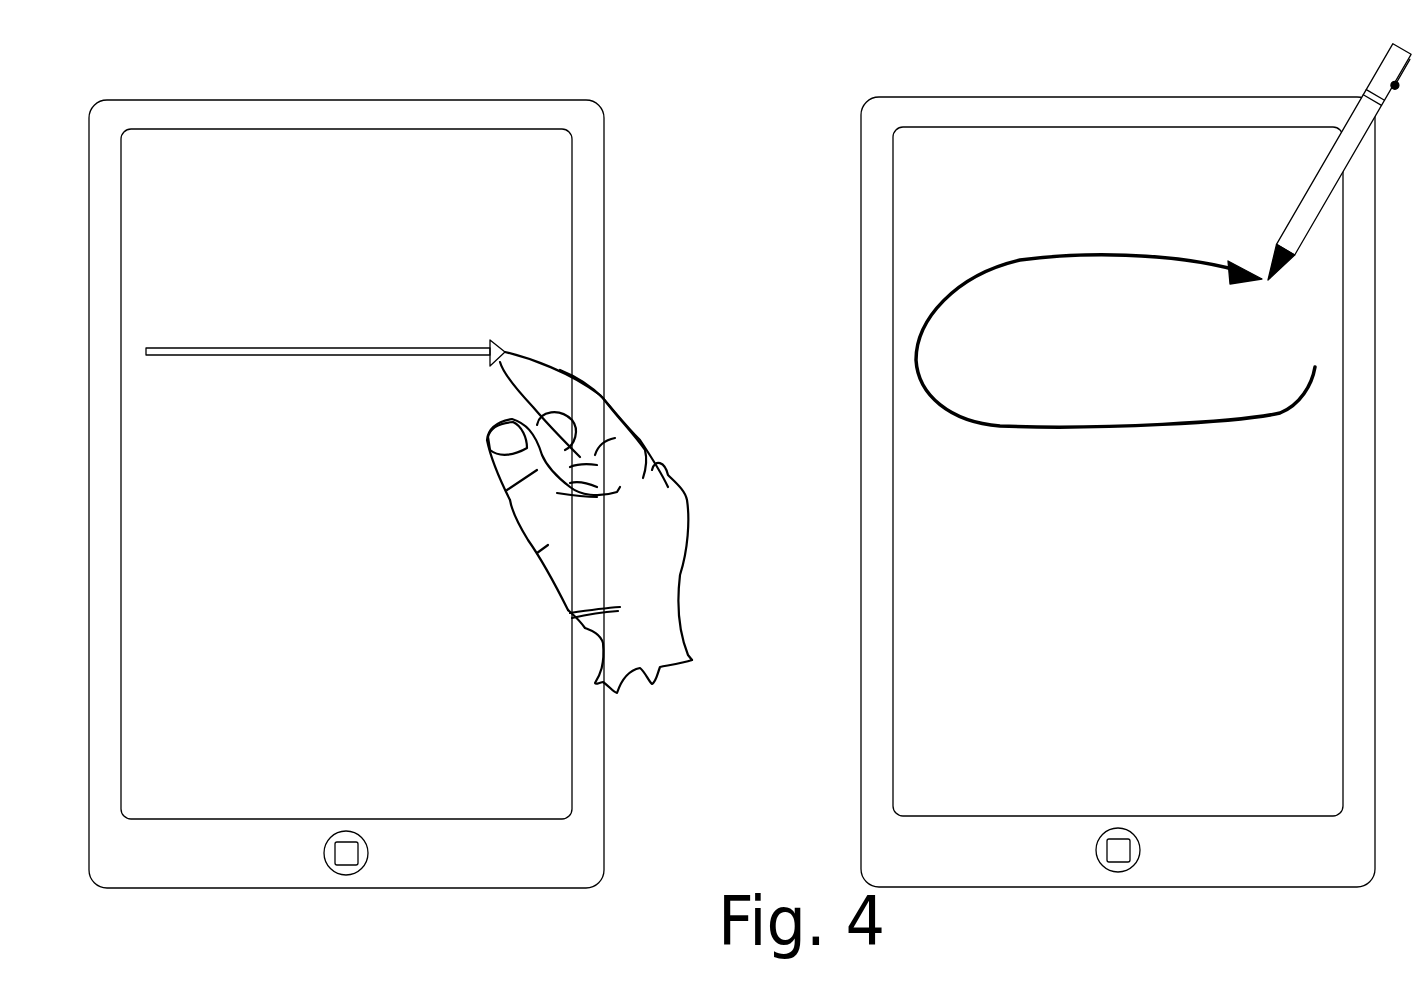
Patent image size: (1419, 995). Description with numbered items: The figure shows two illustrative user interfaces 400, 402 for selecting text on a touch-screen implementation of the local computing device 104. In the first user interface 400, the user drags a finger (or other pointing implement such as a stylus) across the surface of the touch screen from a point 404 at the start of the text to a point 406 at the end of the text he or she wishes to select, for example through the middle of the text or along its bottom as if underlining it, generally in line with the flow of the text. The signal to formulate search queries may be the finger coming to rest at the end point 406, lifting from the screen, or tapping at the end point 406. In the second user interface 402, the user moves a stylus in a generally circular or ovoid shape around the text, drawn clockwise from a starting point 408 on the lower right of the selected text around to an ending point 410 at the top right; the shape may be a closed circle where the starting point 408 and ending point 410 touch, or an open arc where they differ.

The local computing device 104 is at (749, 495).
The first user interface 400 is at (390, 465).
The second user interface 402 is at (1128, 464).
The starting point 404 is at (148, 357).
The end point 406 is at (500, 366).
The starting point 408 is at (1316, 372).
The ending point 410 is at (1262, 275).